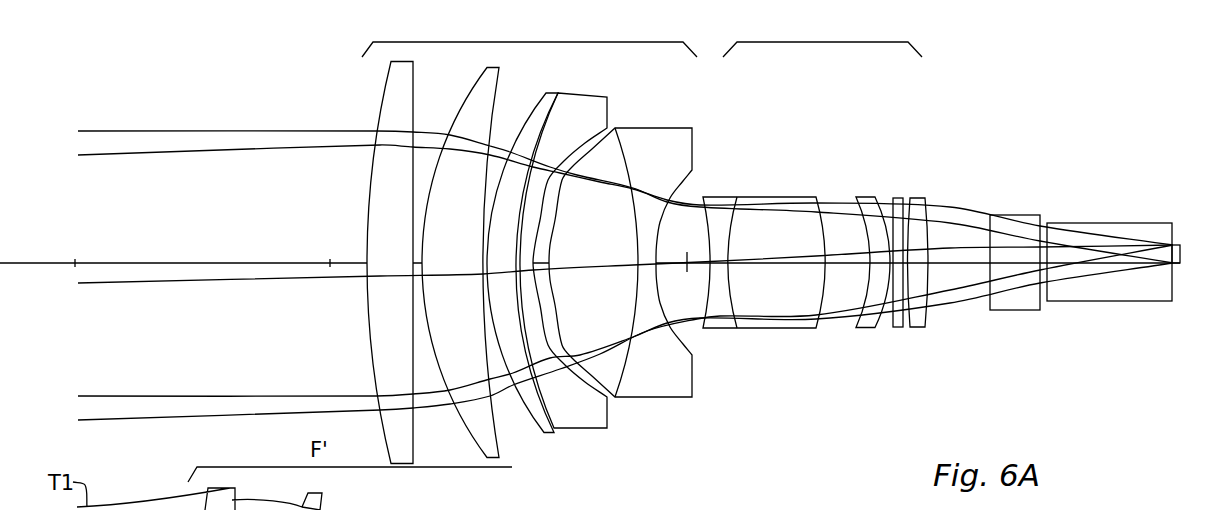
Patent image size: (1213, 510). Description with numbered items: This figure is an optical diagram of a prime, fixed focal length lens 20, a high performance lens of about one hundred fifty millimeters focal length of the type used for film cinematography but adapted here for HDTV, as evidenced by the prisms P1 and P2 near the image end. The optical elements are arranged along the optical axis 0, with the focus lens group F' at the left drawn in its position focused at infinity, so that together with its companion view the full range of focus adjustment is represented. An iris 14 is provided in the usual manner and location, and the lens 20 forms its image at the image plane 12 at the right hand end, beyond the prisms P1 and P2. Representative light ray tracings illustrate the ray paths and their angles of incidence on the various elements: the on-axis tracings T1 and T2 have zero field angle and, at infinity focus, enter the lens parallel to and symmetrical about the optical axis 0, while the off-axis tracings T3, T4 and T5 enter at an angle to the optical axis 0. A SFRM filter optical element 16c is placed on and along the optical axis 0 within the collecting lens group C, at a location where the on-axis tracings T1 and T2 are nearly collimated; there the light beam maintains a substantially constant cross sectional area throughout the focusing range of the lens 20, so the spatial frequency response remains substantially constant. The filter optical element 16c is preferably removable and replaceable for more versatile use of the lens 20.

The optical axis 0 is at (33, 259).
The on-axis light ray tracing T1 is at (128, 131).
The off-axis light ray tracing T3 is at (96, 157).
The off-axis light ray tracing T4 is at (124, 283).
The on-axis light ray tracing T2 is at (125, 396).
The off-axis light ray tracing T5 is at (161, 418).
The focus lens group F' is at (529, 35).
The collecting lens group C is at (822, 35).
The prime lens 20 is at (667, 263).
The iris 14 is at (687, 263).
The SFRM filter optical element 16c is at (897, 328).
The prism P1 is at (1020, 215).
The prism P2 is at (1120, 223).
The image plane 12 is at (1181, 272).